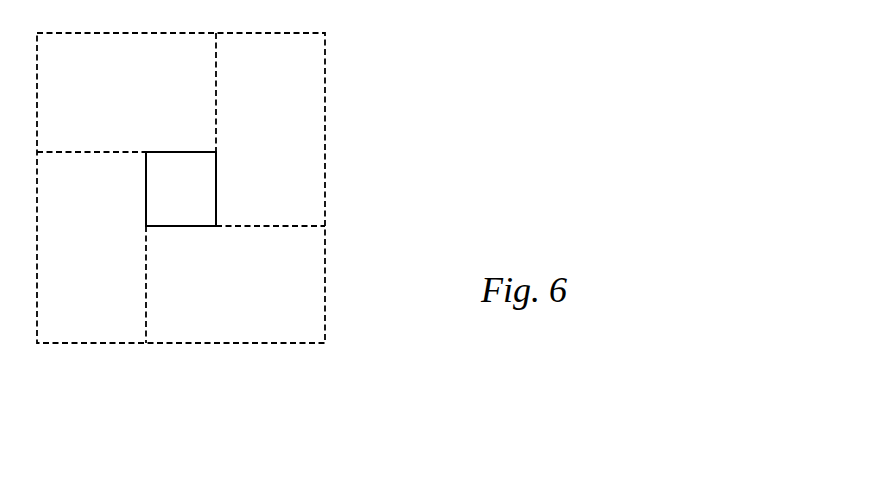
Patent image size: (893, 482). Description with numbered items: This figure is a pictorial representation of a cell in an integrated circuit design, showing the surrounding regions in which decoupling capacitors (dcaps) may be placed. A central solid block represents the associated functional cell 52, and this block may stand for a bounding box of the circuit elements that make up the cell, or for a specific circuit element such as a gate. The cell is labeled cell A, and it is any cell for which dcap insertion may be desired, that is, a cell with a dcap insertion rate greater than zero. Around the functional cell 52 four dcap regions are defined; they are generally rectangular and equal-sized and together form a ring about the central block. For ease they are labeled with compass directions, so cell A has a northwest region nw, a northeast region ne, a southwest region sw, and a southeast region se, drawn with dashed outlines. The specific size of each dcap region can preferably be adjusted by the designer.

The functional cell 52 is at (238, 185).
The northwest dcap region nw is at (126, 92).
The northeast dcap region ne is at (270, 129).
The southwest dcap region sw is at (91, 247).
The southeast dcap region se is at (235, 284).
The cell A is at (181, 189).